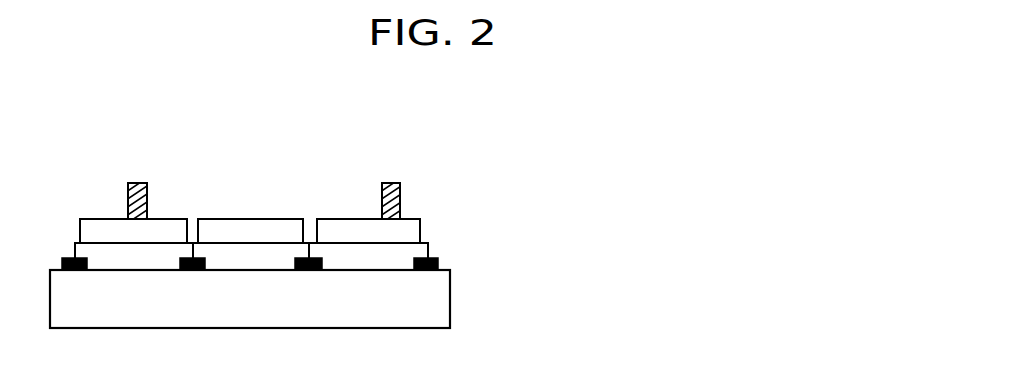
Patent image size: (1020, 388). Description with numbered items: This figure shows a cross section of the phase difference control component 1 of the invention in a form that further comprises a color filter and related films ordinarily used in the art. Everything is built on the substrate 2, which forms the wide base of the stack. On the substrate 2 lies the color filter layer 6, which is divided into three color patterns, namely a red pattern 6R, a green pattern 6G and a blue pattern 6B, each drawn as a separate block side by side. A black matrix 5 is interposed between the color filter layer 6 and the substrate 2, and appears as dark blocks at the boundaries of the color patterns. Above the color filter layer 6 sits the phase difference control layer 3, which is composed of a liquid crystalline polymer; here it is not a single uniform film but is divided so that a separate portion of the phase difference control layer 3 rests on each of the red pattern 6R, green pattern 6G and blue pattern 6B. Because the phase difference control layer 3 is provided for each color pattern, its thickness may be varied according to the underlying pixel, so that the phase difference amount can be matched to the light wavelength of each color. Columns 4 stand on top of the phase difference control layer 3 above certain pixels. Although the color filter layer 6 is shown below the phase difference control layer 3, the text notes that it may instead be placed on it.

The phase difference control component 1 is at (236, 166).
The substrate 2 is at (440, 309).
The phase difference control layer 3 is at (419, 228).
The columns 4 is at (400, 197).
The black matrix 5 is at (307, 270).
The color filter layer 6 is at (405, 264).
The red pattern 6R is at (134, 257).
The green pattern 6G is at (251, 257).
The blue pattern 6B is at (428, 247).